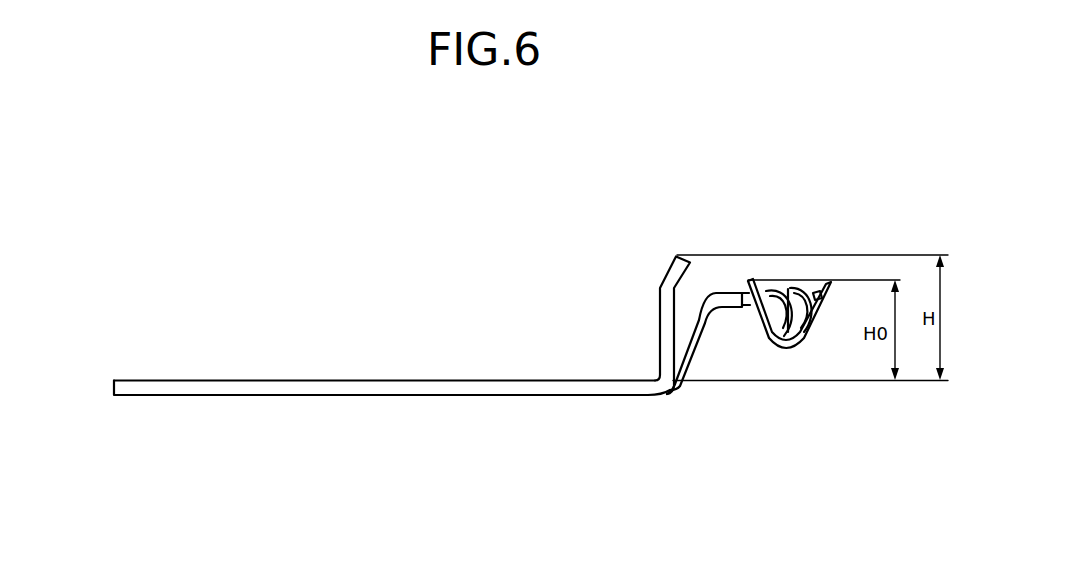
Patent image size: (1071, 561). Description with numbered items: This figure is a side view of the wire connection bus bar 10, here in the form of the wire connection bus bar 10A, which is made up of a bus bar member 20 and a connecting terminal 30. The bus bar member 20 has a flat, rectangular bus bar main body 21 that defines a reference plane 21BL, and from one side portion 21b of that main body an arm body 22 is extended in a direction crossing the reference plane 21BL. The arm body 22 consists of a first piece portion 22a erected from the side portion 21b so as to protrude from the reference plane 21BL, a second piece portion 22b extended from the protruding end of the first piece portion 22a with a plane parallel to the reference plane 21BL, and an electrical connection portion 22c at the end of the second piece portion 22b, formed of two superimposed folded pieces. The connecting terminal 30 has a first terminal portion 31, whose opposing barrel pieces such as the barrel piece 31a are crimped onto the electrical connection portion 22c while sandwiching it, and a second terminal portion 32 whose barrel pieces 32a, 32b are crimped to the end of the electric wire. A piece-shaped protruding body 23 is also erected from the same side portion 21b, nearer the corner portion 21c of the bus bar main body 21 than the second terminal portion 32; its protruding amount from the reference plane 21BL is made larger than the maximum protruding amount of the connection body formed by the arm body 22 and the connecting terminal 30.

The wire connection bus bar 10 is at (478, 316).
The wire connection bus bar 10A is at (707, 153).
The bus bar member 20 is at (516, 366).
The bus bar main body 21 is at (114, 387).
The reference plane 21BL is at (165, 380).
The side portion 21b is at (677, 395).
The corner portion 21c is at (664, 398).
The arm body 22 is at (835, 473).
The first piece portion 22a is at (689, 348).
The second piece portion 22b is at (722, 308).
The electrical connection portion 22c is at (806, 348).
The protruding body 23 is at (660, 307).
The connecting terminal 30 is at (760, 243).
The first terminal portion 31 is at (823, 246).
The barrel piece 31a is at (793, 288).
The second terminal portion 32 is at (842, 236).
The barrel piece 32a is at (832, 297).
The barrel piece 32b is at (760, 289).